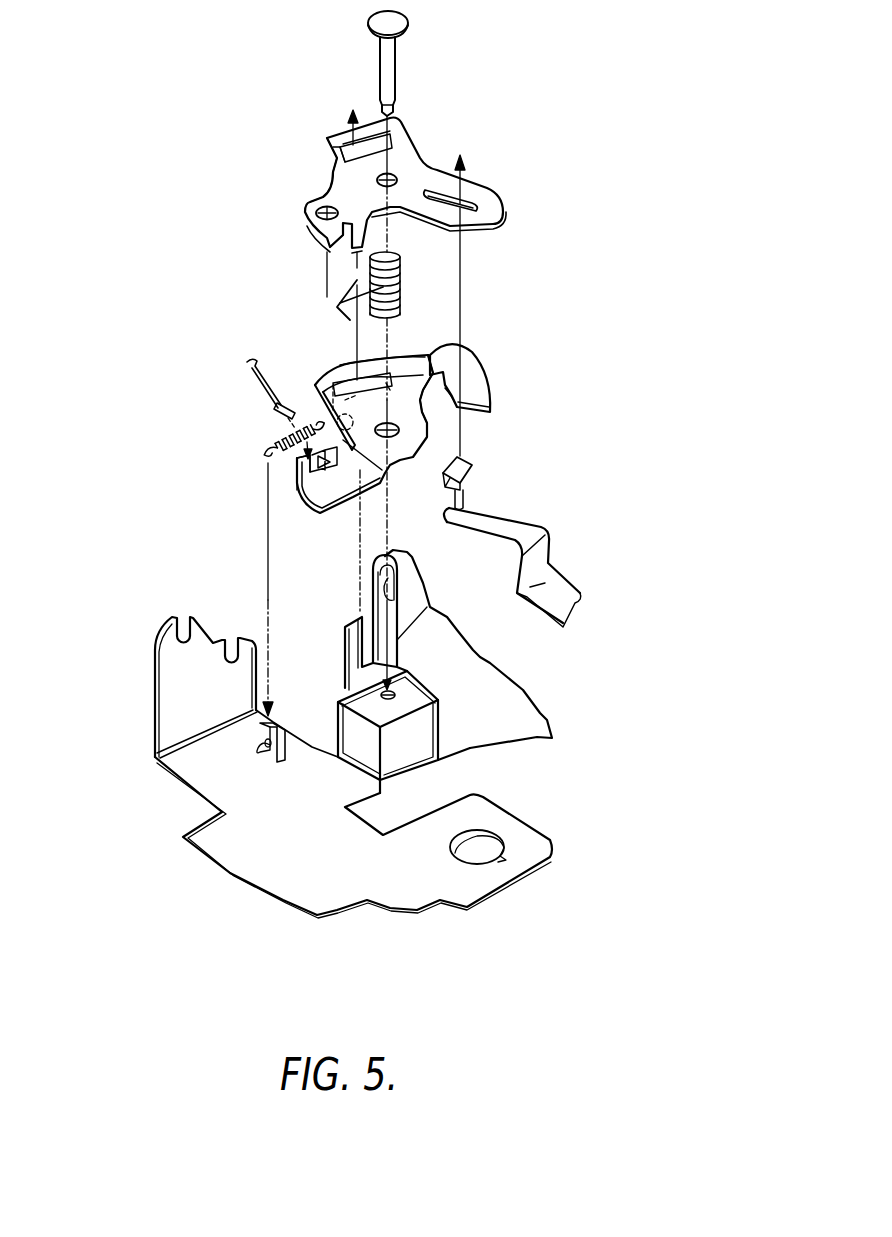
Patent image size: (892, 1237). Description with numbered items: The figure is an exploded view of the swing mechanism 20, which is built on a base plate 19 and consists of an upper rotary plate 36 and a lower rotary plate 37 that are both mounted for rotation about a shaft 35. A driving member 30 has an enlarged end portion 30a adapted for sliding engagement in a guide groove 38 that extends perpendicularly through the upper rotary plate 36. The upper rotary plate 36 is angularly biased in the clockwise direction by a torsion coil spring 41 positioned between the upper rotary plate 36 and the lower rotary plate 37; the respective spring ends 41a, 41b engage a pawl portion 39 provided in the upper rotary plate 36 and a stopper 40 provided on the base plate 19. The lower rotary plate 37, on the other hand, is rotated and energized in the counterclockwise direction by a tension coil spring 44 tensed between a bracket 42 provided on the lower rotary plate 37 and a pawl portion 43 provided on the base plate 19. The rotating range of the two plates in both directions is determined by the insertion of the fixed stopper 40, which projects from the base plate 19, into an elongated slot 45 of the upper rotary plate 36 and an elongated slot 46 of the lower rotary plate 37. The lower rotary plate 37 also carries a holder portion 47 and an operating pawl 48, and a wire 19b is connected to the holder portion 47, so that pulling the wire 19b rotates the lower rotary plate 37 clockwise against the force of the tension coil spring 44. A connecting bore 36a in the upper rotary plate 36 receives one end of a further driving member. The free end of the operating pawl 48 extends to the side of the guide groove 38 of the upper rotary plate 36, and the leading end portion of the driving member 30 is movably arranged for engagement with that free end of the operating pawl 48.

The base plate 19 is at (507, 720).
The wire 19b is at (255, 367).
The swing mechanism 20 is at (535, 237).
The driving member 30 is at (510, 524).
The enlarged end portion 30a is at (473, 462).
The shaft 35 is at (392, 58).
The upper rotary plate 36 is at (405, 155).
The connecting bore 36a is at (322, 206).
The lower rotary plate 37 is at (408, 421).
The guide groove 38 is at (476, 206).
The pawl portion 39 is at (340, 236).
The stopper 40 is at (344, 633).
The torsion coil spring 41 is at (400, 283).
The spring end 41a is at (337, 307).
The spring end 41b is at (357, 280).
The bracket 42 is at (315, 383).
The pawl portion 43 is at (262, 732).
The tension coil spring 44 is at (262, 446).
The elongated slot 45 is at (340, 140).
The elongated slot 46 is at (400, 355).
The holder portion 47 is at (296, 484).
The operating pawl 48 is at (480, 387).